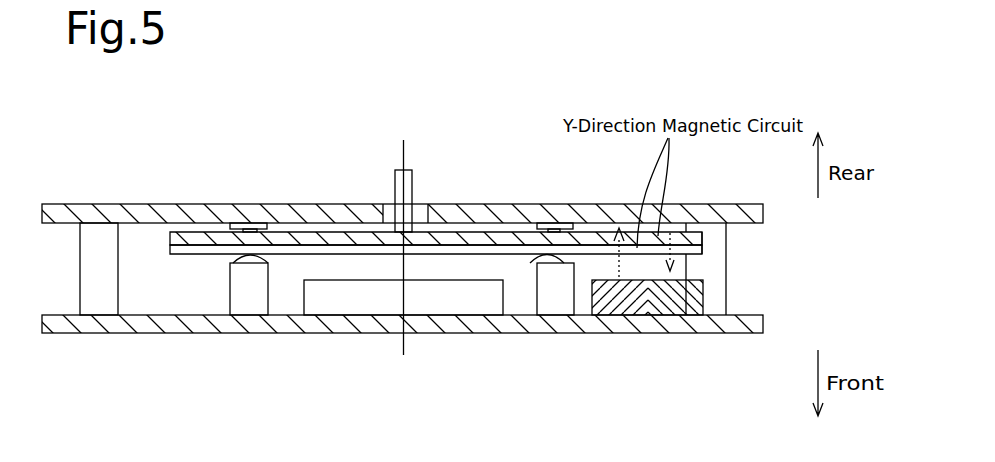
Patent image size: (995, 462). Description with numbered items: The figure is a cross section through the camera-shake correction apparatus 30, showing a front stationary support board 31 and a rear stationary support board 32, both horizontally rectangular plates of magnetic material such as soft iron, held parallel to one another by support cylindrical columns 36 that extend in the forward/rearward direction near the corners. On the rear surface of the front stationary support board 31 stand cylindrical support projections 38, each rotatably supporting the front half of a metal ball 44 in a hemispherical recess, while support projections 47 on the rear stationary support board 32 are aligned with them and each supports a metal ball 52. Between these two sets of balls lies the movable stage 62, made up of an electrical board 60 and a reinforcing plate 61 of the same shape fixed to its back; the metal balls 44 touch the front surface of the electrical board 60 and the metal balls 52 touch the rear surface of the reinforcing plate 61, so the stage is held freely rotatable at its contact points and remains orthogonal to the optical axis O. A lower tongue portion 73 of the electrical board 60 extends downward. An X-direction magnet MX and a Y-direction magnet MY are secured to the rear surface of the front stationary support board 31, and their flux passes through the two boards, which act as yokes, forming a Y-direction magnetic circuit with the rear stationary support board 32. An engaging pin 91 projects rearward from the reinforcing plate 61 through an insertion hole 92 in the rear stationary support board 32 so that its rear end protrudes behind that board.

The camera-shake correction apparatus 30 is at (66, 186).
The front stationary support board 31 is at (143, 329).
The rear stationary support board 32 is at (482, 212).
The support cylindrical column 36 is at (80, 270).
The cylindrical support projection 38 is at (253, 288).
The metal ball 44 is at (273, 264).
The support projection 47 is at (234, 223).
The metal ball 52 is at (281, 231).
The electrical board 60 is at (182, 235).
The reinforcing plate 61 is at (170, 247).
The movable stage 62 is at (172, 143).
The lower tongue portion 73 is at (704, 247).
The engaging pin 91 is at (396, 180).
The insertion hole 92 is at (383, 212).
The optical axis O is at (405, 160).
The X-direction magnet MX is at (377, 308).
The Y-direction magnet MY is at (619, 312).